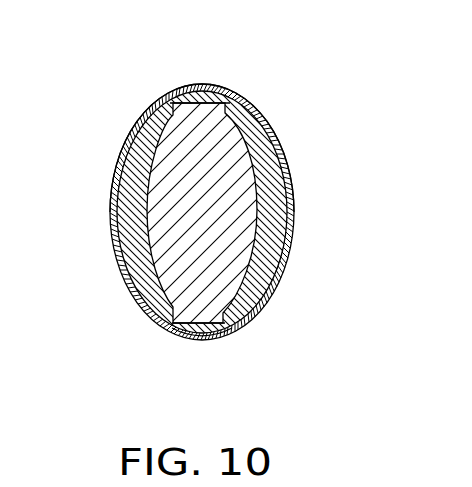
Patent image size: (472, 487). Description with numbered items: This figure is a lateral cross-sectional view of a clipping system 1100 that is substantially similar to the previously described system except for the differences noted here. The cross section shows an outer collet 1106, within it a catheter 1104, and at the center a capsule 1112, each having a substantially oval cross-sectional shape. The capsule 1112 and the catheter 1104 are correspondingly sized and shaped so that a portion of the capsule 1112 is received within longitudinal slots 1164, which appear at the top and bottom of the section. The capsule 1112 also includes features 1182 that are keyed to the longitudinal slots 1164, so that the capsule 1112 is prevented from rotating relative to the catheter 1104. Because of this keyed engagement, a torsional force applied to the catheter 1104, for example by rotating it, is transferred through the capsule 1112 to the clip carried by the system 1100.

The system 1100 is at (258, 76).
The collet 1106 is at (274, 124).
The catheter 1104 is at (281, 209).
The capsule 1112 is at (190, 167).
The longitudinal slots 1164 is at (223, 113).
The features 1182 is at (206, 329).